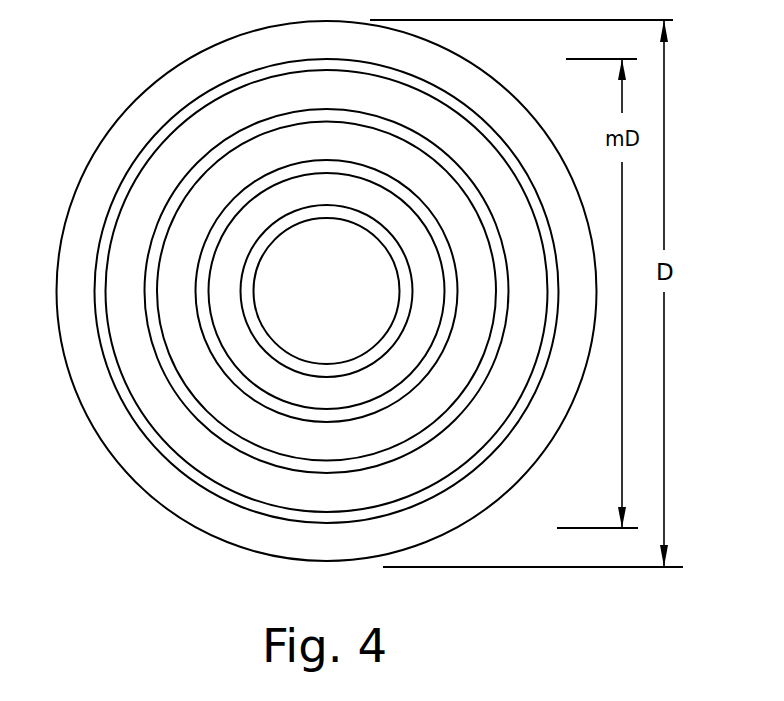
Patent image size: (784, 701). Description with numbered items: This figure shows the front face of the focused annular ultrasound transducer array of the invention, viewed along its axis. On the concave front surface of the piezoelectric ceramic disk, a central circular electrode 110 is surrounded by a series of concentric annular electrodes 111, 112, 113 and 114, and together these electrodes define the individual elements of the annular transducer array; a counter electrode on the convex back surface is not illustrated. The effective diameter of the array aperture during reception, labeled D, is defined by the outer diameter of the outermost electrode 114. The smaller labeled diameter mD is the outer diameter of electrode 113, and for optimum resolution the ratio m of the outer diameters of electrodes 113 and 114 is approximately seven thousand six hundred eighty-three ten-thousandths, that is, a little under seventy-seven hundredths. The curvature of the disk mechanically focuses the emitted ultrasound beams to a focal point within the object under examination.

The central circular electrode 110 is at (338, 327).
The concentric annular electrode 111 is at (339, 408).
The concentric annular electrode 112 is at (345, 455).
The concentric annular electrode 113 is at (345, 508).
The outermost annular electrode 114 is at (348, 558).